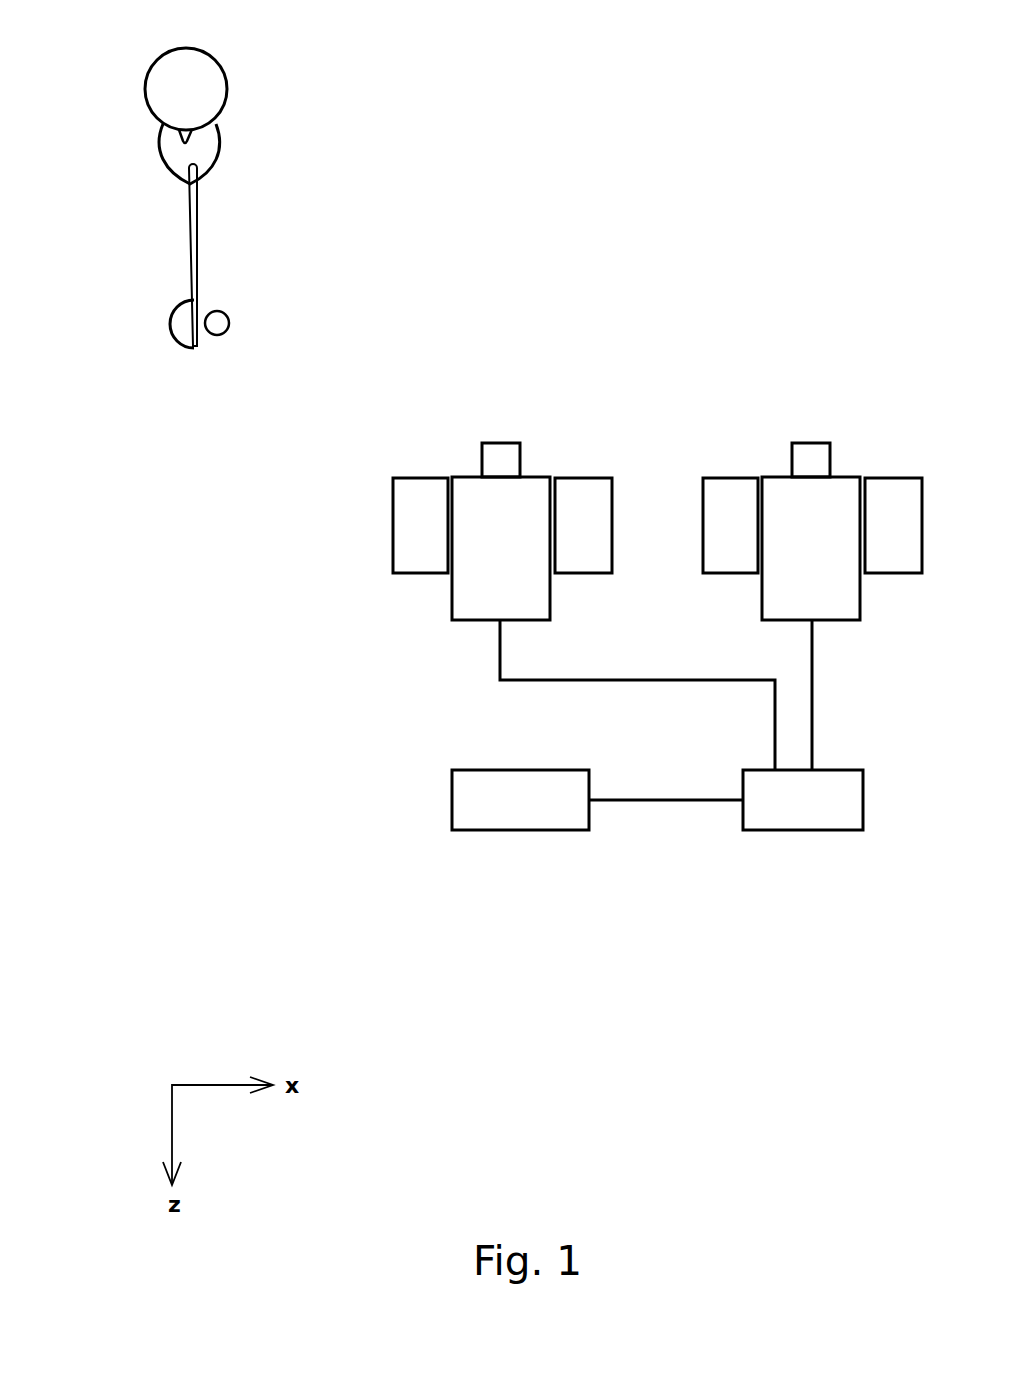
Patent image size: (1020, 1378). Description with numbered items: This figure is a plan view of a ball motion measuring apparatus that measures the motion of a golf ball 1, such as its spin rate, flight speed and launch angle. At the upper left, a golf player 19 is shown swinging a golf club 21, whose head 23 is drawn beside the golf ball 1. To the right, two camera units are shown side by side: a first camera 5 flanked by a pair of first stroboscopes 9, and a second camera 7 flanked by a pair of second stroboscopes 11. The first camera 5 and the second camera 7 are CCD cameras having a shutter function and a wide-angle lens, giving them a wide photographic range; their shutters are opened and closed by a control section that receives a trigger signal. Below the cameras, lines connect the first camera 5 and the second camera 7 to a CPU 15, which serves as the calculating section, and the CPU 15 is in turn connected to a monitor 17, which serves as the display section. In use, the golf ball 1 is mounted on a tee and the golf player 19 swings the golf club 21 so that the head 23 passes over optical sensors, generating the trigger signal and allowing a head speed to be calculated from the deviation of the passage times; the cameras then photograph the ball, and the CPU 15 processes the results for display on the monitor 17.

The golf ball 1 is at (213, 325).
The first camera 5 is at (513, 493).
The second camera 7 is at (827, 497).
The first stroboscopes 9 is at (423, 495).
The second stroboscopes 11 is at (737, 497).
The CPU 15 is at (802, 822).
The monitor 17 is at (528, 823).
The golf player 19 is at (212, 95).
The golf club 21 is at (197, 208).
The head 23 is at (180, 325).